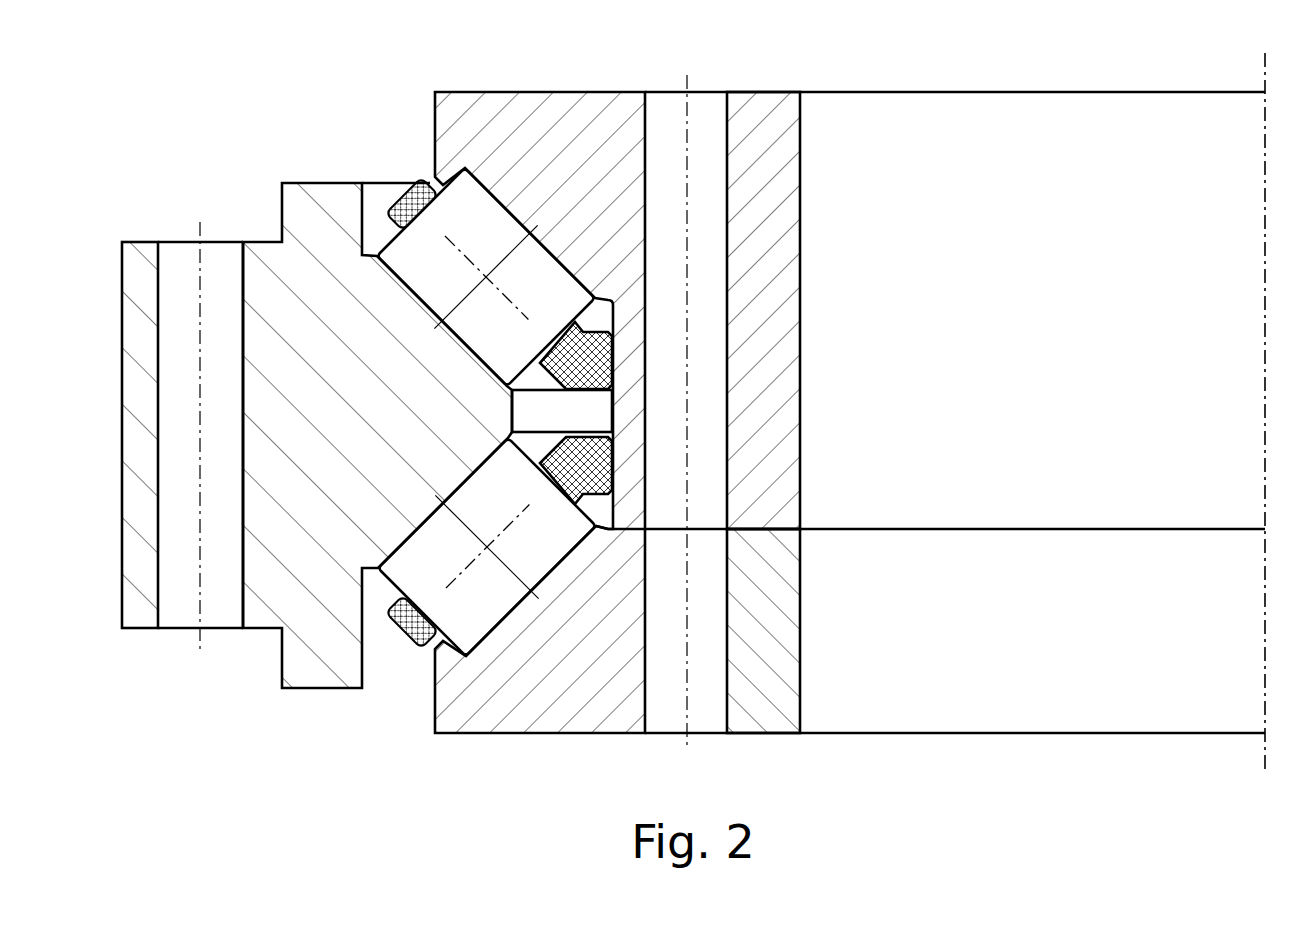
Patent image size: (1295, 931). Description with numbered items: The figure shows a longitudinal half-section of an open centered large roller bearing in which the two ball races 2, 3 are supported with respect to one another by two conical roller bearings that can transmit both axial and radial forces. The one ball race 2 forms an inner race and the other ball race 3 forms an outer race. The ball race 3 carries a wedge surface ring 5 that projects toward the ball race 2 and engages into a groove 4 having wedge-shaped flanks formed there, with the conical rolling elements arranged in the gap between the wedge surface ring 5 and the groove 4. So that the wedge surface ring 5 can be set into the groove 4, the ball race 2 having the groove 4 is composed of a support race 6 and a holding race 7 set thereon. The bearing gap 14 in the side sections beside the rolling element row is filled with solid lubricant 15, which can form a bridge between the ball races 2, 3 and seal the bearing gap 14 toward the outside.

The ball race 2 is at (618, 702).
The ball race 3 is at (300, 660).
The groove 4 is at (600, 304).
The wedge surface ring 5 is at (445, 377).
The support race 6 is at (768, 700).
The holding race 7 is at (760, 152).
The bearing gap 14 is at (597, 316).
The solid lubricant 15 is at (586, 508).